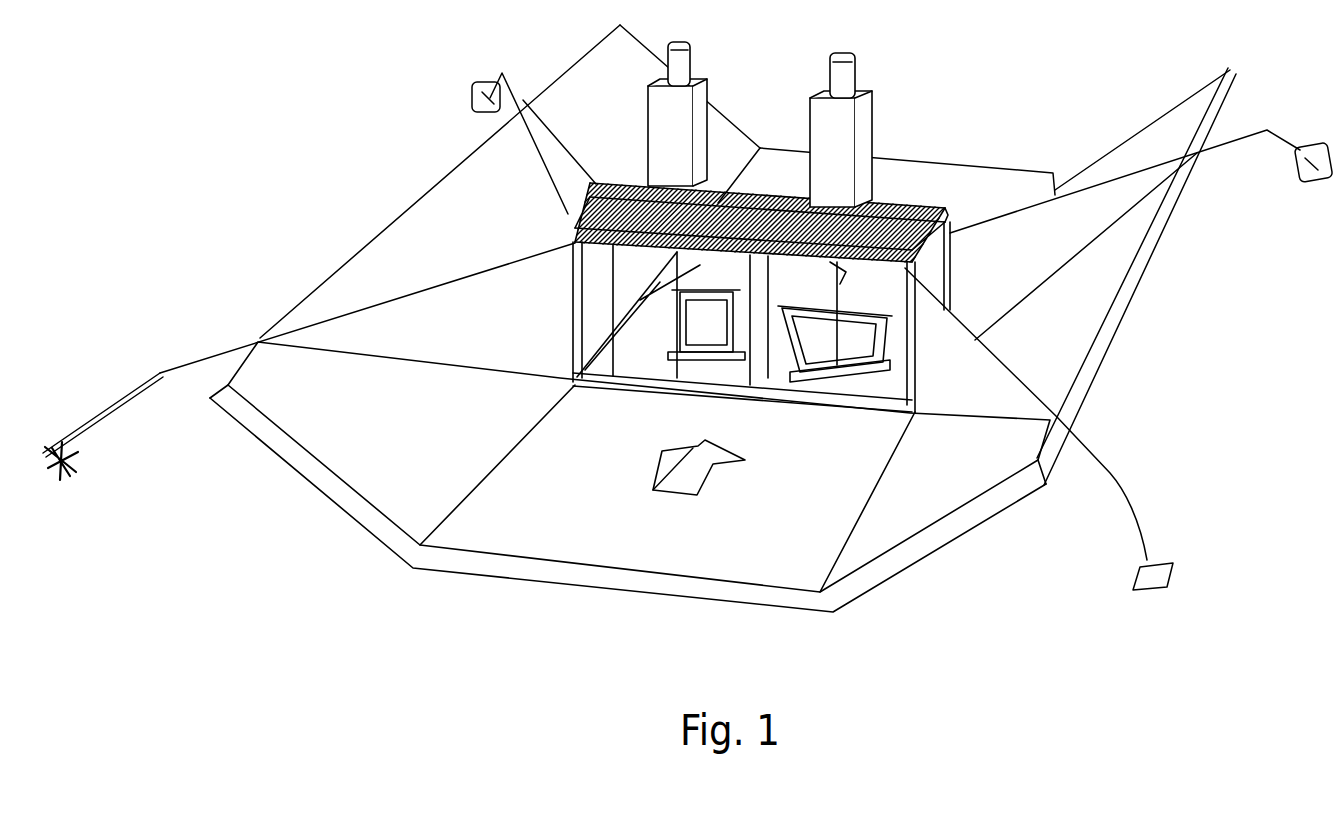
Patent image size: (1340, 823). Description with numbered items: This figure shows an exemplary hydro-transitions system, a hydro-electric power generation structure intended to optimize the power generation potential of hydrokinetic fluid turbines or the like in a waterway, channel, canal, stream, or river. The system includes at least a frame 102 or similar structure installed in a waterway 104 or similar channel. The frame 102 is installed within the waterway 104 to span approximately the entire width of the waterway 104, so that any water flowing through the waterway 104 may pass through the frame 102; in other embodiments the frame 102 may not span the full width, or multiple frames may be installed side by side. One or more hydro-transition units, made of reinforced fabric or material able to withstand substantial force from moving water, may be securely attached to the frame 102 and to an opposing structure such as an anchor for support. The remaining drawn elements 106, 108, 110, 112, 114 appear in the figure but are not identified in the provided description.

The frame 102 is at (720, 398).
The waterway 104 is at (718, 98).
The second cylinder 106 is at (868, 130).
The support cable 108 is at (375, 263).
The tether line 110 is at (332, 340).
The anchor line 112 is at (160, 370).
The anchor 114 is at (67, 480).